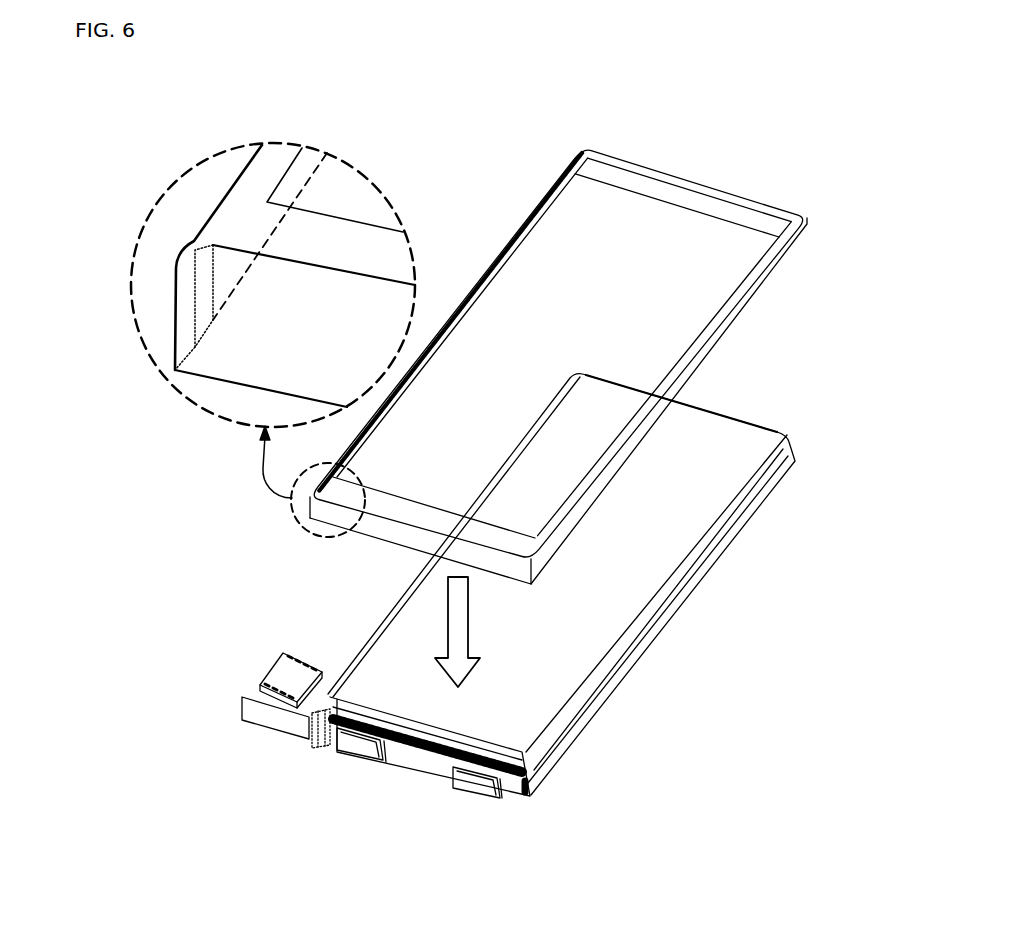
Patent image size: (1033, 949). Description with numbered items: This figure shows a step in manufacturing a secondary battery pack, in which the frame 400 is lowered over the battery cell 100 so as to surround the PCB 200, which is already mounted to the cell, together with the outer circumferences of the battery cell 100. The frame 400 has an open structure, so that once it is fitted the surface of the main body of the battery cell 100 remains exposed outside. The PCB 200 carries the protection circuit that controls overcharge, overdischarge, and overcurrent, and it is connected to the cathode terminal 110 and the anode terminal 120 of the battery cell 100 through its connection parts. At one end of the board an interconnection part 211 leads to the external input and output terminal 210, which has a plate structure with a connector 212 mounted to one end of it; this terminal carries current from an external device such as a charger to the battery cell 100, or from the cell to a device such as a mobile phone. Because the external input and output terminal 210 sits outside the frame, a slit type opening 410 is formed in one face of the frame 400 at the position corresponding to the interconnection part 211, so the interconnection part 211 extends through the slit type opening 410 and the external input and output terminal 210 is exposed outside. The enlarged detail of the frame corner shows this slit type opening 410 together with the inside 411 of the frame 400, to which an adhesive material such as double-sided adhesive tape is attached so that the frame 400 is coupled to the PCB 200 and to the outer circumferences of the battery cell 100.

The battery cell 100 is at (699, 402).
The cathode terminal 110 is at (478, 785).
The anode terminal 120 is at (362, 744).
The PCB 200 is at (471, 787).
The external input and output terminal 210 is at (147, 640).
The interconnection part 211 is at (253, 710).
The connector 212 is at (287, 663).
The frame 400 is at (469, 346).
The slit type opening 410 is at (208, 287).
The inside of the frame 411 is at (490, 278).